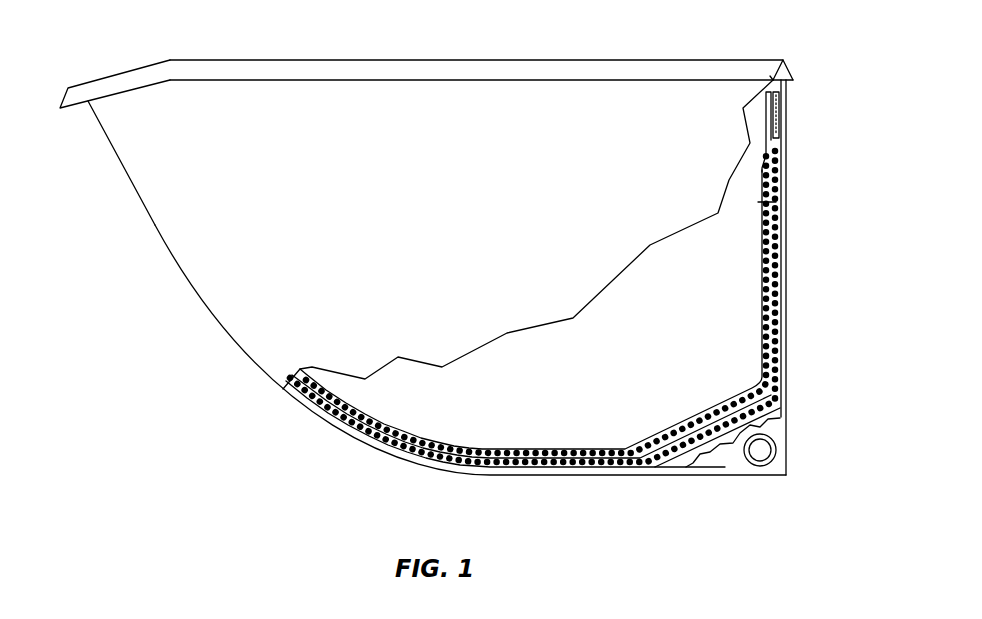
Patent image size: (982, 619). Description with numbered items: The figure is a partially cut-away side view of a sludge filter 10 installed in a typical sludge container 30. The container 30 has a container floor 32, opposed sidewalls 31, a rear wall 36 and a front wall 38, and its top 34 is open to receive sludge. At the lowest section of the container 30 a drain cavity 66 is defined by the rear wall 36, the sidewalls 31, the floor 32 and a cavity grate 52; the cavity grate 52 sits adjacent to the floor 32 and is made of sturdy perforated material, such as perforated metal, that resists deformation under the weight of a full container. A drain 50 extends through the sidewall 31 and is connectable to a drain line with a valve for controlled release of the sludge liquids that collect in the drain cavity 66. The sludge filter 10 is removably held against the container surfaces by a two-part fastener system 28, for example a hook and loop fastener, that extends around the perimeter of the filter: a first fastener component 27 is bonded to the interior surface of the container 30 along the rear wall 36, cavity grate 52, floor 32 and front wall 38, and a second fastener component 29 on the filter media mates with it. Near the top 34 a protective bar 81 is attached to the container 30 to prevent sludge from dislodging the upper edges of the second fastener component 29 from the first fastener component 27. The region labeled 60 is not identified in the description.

The sludge filter 10 is at (358, 413).
The first fastener component 27 is at (780, 105).
The two-part fastener system 28 is at (777, 82).
The second fastener component 29 is at (773, 118).
The container 30 is at (313, 60).
The sidewalls 31 is at (440, 218).
The container floor 32 is at (516, 482).
The top 34 is at (185, 44).
The rear wall 36 is at (792, 303).
The front wall 38 is at (124, 186).
The drain 50 is at (760, 450).
The cavity grate 52 is at (660, 467).
The tub body 60 is at (661, 353).
The drain cavity 66 is at (703, 453).
The protective bar 81 is at (764, 70).